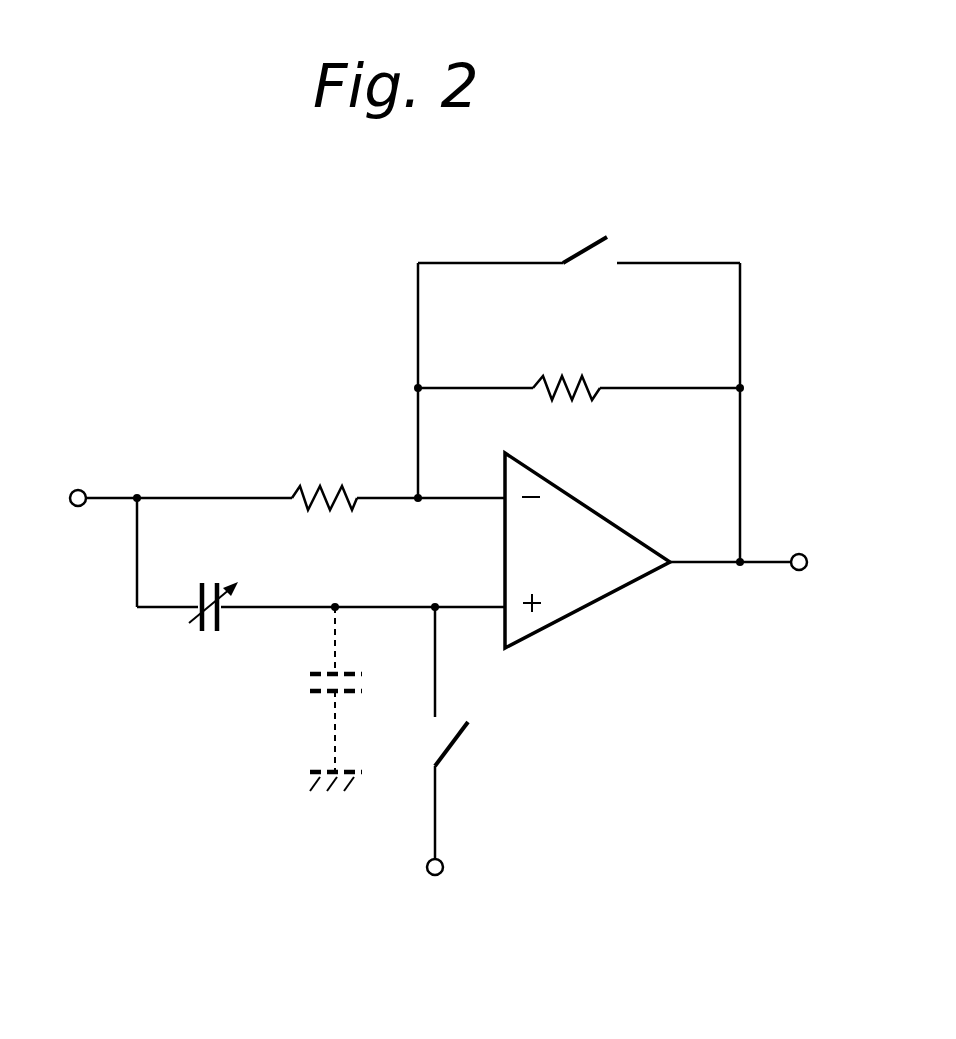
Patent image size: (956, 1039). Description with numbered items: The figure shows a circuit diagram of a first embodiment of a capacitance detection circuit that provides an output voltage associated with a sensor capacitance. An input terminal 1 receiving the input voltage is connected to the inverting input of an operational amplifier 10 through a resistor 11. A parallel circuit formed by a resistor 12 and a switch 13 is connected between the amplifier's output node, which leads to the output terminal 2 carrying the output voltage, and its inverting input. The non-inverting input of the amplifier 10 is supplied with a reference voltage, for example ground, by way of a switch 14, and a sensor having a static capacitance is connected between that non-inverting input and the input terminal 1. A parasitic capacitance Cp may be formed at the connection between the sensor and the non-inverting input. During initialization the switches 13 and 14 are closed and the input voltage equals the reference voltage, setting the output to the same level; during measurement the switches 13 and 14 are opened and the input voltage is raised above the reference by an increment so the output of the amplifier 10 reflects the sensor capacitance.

The input terminal 1 is at (81, 490).
The output terminal (Vout) 2 is at (801, 554).
The operational amplifier 10 is at (597, 605).
The resistor 11 is at (333, 488).
The resistor 12 is at (576, 384).
The switch 13 is at (579, 245).
The switch 14 is at (460, 742).
The parasitic capacitance Cp is at (303, 681).